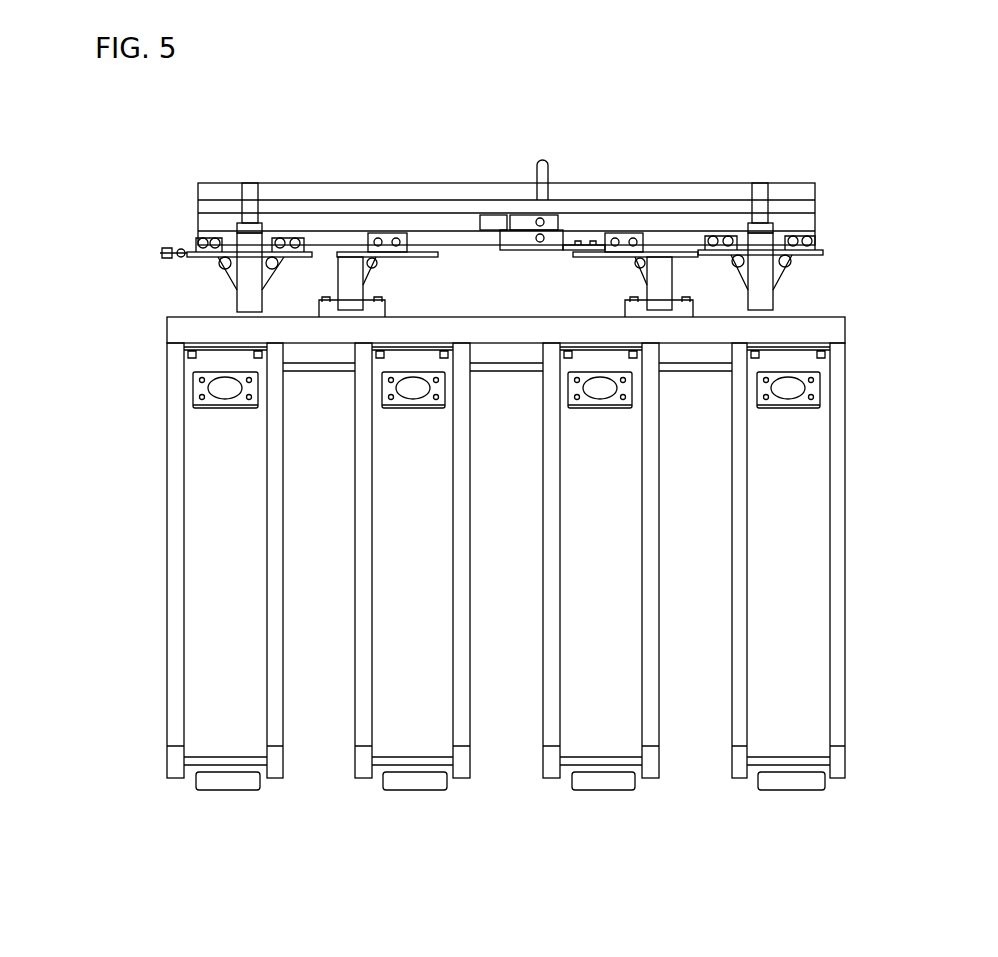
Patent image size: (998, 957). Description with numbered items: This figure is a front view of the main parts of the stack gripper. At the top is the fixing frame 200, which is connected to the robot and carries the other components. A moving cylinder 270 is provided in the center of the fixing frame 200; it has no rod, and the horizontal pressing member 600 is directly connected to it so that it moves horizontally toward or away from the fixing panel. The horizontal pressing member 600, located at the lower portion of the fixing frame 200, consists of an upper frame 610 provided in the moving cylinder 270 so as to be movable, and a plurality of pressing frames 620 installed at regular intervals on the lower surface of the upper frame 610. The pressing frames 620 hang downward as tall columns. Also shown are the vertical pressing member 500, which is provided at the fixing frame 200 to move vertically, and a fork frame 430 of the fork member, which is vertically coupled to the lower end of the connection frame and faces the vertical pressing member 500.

The fixing frame 200 is at (788, 208).
The moving cylinder 270 is at (551, 213).
The fork frame 430 is at (228, 790).
The vertical pressing member 500 is at (215, 412).
The horizontal pressing member 600 is at (927, 332).
The upper frame 610 is at (845, 323).
The pressing frame 620 is at (840, 410).